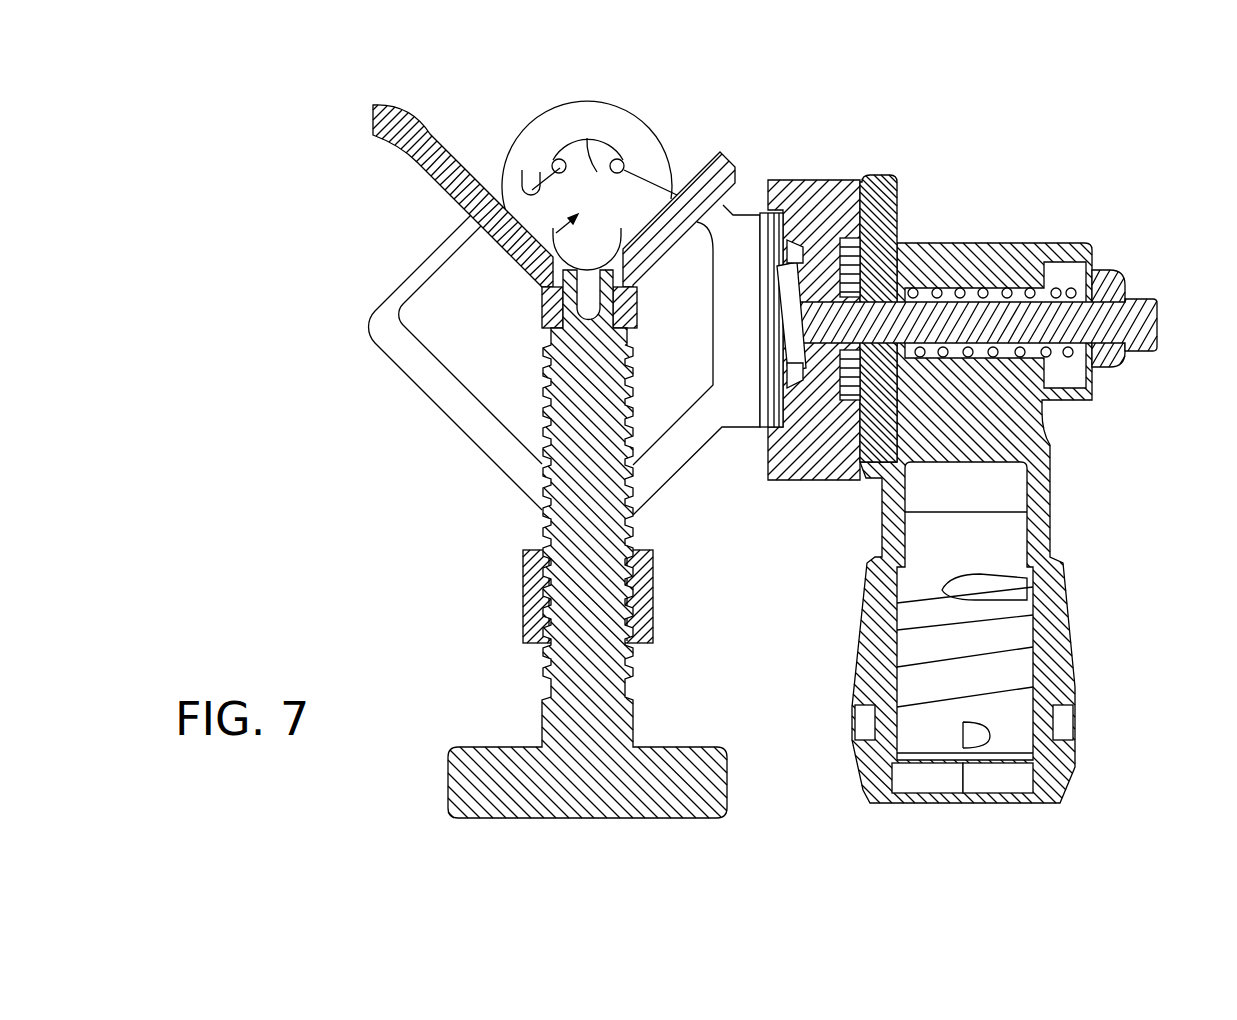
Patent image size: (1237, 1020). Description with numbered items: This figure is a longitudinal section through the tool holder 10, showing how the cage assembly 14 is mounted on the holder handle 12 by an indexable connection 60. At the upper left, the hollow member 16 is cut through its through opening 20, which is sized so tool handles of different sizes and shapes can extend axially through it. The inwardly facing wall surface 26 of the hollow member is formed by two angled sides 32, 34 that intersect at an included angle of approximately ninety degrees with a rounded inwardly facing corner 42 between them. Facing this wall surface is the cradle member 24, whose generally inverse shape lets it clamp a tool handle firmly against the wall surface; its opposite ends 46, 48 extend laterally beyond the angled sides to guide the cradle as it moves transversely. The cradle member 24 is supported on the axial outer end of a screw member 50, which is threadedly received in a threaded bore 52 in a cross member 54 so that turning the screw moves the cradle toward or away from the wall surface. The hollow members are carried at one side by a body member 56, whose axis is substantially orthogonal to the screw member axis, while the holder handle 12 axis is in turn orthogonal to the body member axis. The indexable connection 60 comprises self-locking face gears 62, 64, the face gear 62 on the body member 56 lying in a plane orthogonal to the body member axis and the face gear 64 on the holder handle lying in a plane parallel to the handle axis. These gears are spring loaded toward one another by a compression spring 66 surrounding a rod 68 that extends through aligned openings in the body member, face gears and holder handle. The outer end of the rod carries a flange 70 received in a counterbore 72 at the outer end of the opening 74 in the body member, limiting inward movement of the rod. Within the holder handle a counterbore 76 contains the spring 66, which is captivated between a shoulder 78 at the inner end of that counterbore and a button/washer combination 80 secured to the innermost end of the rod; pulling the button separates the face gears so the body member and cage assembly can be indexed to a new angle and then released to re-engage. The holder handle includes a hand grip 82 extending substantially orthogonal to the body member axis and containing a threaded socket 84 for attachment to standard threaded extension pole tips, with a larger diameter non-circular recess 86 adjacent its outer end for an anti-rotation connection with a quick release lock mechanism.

The tool holder 10 is at (962, 150).
The holder handle 12 is at (1050, 598).
The cage assembly 14 is at (696, 113).
The hollow member 16 is at (590, 112).
The through opening 20 is at (541, 249).
The cradle member 24 is at (470, 214).
The inwardly facing wall surface 26 is at (553, 158).
The angled side 32 is at (524, 172).
The angled side 34 is at (630, 162).
The rounded inwardly facing corner 42 is at (593, 171).
The end of cradle member 46 is at (380, 115).
The end of cradle member 48 is at (708, 152).
The screw member 50 is at (577, 518).
The threaded bore 52 is at (545, 607).
The cross member 54 is at (537, 592).
The body member 56 is at (810, 187).
The indexable connection 60 is at (905, 201).
The self-locking face gear 62 is at (835, 255).
The self-locking face gear 64 is at (856, 255).
The compression spring 66 is at (1040, 262).
The rod 68 is at (1082, 320).
The flange 70 is at (787, 350).
The counterbore 72 is at (803, 368).
The opening 74 is at (806, 350).
The counterbore 76 is at (1017, 403).
The shoulder 78 is at (917, 282).
The button/washer combination 80 is at (1112, 354).
The hand grip 82 is at (1068, 677).
The threaded socket 84 is at (1028, 707).
The non-circular recess 86 is at (1025, 790).